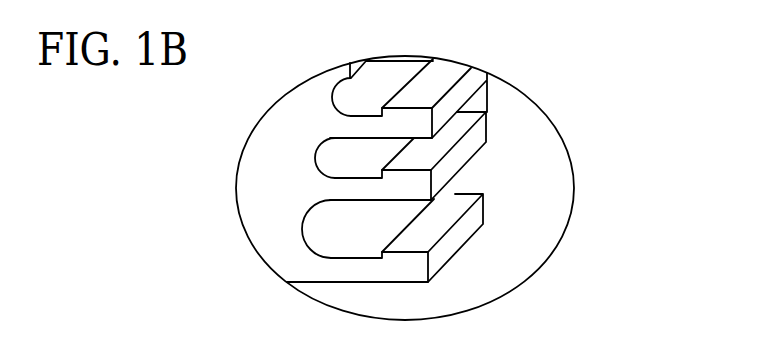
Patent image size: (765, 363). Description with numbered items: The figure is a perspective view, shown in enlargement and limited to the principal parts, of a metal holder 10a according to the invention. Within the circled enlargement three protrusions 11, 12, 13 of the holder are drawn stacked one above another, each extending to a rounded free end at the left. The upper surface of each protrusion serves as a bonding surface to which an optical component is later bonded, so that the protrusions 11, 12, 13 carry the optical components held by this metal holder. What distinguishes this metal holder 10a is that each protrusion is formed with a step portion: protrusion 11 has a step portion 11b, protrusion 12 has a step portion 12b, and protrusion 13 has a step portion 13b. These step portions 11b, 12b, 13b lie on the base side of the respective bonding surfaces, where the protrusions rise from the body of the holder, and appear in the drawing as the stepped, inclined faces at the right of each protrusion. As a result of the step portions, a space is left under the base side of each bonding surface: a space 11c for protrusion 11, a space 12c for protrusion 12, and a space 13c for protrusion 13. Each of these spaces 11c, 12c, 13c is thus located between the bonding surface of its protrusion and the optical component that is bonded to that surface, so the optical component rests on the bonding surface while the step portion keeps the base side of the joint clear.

The metal holder 10a is at (583, 105).
The protrusion 11 is at (399, 83).
The step portion 11b is at (445, 62).
The space 11c is at (352, 101).
The protrusion 12 is at (400, 165).
The step portion 12b is at (438, 150).
The space 12c is at (333, 163).
The protrusion 13 is at (402, 265).
The step portion 13b is at (437, 225).
The space 13c is at (334, 250).